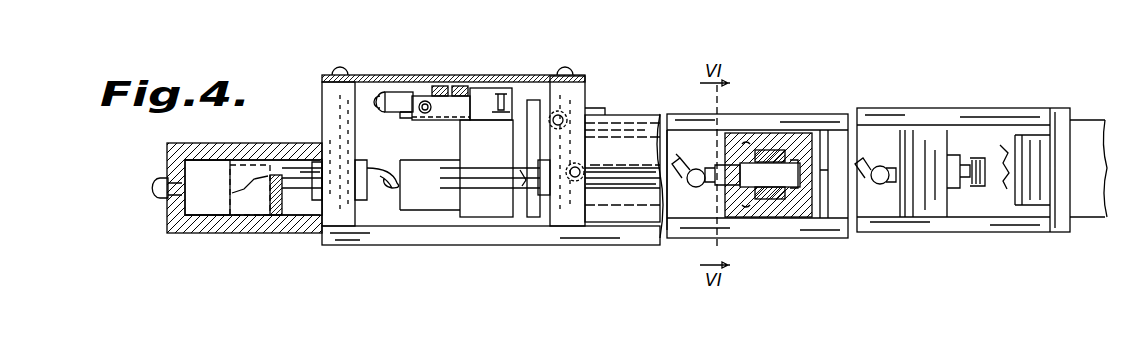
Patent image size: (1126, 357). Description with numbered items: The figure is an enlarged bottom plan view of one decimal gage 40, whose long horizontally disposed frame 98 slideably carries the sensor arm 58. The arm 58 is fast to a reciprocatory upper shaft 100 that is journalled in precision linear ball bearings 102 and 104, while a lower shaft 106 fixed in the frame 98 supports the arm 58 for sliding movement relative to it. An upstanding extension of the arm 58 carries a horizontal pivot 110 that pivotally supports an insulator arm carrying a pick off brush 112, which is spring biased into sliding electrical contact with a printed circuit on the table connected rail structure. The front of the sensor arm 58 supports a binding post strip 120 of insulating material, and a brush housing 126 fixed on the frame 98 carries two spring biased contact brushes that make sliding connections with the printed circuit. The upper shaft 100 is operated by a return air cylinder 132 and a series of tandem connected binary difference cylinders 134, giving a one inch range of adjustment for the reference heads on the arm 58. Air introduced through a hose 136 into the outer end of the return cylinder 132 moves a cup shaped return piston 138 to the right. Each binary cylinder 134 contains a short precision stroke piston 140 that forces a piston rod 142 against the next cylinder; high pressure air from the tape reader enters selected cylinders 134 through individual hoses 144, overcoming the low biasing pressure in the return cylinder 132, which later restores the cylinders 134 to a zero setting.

The decimal gage 40 is at (446, 245).
The sensor arm 58 is at (490, 218).
The frame 98 is at (320, 109).
The reciprocatory upper shaft 100 is at (302, 185).
The precision linear ball bearing 102 is at (316, 148).
The precision linear ball bearing 104 is at (588, 166).
The lower shaft 106 is at (520, 172).
The horizontal pivot 110 is at (508, 88).
The pick off brush 112 is at (391, 94).
The binding post strip 120 is at (460, 114).
The brush housing 126 is at (596, 108).
The return air cylinder 132 is at (194, 233).
The binary difference cylinder 134 is at (800, 218).
The hose 136 is at (380, 196).
The return piston 138 is at (252, 218).
The precision stroke piston 140 is at (790, 165).
The piston rod 142 is at (733, 172).
The hose 144 is at (868, 152).